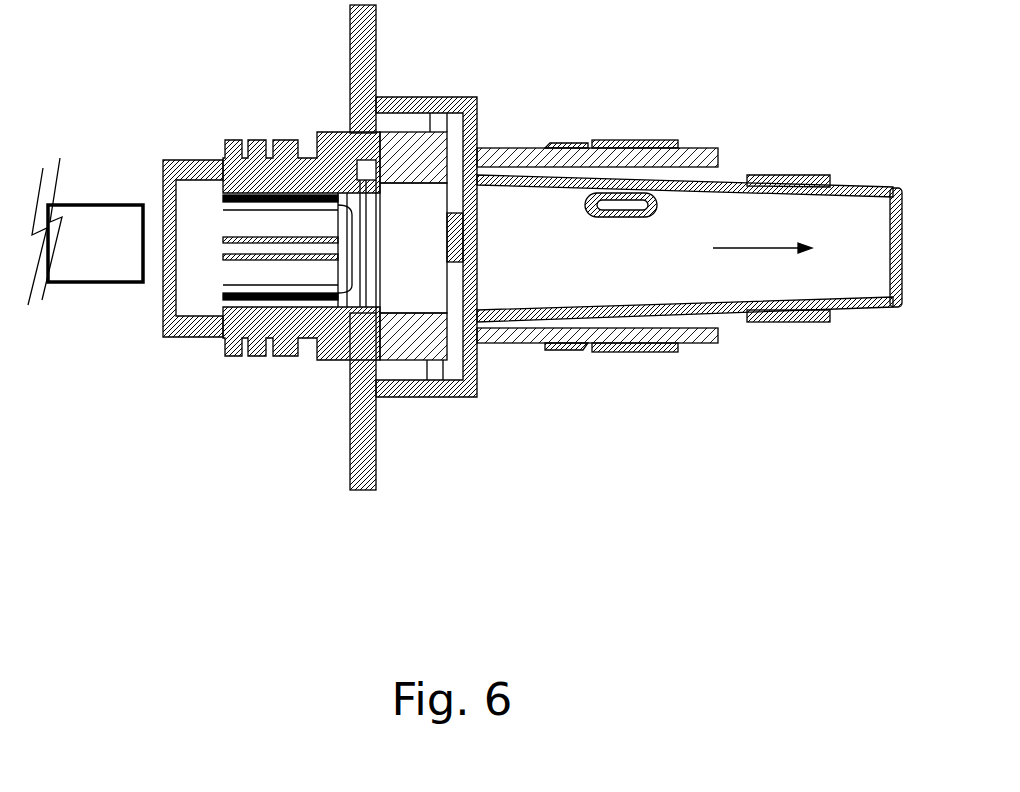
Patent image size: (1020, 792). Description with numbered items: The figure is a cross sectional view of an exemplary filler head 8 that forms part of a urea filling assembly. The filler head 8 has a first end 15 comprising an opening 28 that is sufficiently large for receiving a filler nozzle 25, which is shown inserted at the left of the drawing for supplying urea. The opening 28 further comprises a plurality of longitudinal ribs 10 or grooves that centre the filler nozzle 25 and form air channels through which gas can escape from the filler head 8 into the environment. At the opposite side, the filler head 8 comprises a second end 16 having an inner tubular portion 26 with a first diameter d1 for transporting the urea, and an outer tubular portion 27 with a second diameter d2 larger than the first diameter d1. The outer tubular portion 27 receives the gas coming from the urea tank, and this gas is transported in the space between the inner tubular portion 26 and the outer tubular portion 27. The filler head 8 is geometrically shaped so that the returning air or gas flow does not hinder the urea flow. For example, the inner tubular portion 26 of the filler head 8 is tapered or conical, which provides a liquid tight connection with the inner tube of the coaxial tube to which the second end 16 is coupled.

The filler head 8 is at (163, 558).
The ribs 10 is at (257, 232).
The first end 15 is at (163, 492).
The second end 16 is at (533, 492).
The filler nozzle 25 is at (80, 205).
The inner tubular portion 26 is at (873, 203).
The outer tubular portion 27 is at (703, 343).
The opening 28 is at (190, 268).
The first diameter d1 is at (818, 168).
The second diameter d2 is at (633, 136).